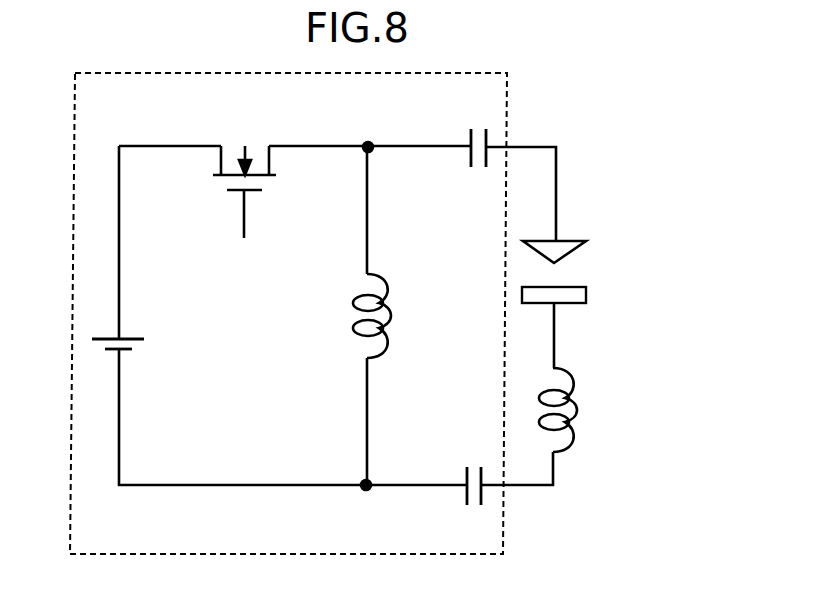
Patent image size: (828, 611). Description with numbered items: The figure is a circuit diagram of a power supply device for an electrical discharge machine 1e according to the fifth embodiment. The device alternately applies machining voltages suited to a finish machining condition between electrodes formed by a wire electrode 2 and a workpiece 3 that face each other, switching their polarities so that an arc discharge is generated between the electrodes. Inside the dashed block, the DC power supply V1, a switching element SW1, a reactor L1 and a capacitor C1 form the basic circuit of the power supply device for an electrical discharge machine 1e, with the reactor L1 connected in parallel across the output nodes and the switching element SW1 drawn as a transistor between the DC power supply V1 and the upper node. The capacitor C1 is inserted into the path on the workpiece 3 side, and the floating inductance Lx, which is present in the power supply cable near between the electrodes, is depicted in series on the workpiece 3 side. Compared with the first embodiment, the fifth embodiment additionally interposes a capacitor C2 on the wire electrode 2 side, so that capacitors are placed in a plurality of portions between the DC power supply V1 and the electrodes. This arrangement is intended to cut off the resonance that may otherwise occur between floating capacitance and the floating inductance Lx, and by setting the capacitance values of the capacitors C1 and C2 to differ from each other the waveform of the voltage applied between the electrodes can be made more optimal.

The power supply device for an electrical discharge machine 1e is at (237, 555).
The switching element SW1 is at (257, 146).
The DC power supply V1 is at (132, 338).
The reactor L1 is at (354, 303).
The capacitor C2 is at (468, 158).
The capacitor C1 is at (462, 497).
The wire electrode 2 is at (568, 240).
The workpiece 3 is at (587, 293).
The floating inductance Lx is at (574, 406).